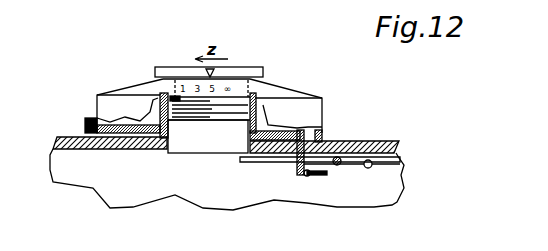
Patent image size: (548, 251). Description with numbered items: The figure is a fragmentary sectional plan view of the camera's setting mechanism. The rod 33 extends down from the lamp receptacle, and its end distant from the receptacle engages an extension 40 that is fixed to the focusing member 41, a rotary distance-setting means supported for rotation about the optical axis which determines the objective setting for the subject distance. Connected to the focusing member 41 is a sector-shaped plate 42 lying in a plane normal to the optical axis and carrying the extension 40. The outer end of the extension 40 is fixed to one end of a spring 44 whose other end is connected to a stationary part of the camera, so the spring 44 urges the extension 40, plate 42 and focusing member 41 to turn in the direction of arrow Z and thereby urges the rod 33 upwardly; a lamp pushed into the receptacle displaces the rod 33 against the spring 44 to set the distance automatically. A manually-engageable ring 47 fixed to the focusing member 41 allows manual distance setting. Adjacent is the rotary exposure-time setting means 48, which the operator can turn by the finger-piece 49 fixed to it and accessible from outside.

The rod 33 is at (355, 143).
The extension 40 is at (352, 165).
The focusing member 41 is at (190, 147).
The plate 42 is at (265, 162).
The spring 44 is at (400, 164).
The manually-engageable ring 47 is at (257, 68).
The exposure-time setting means 48 is at (117, 149).
The finger-piece 49 is at (85, 123).